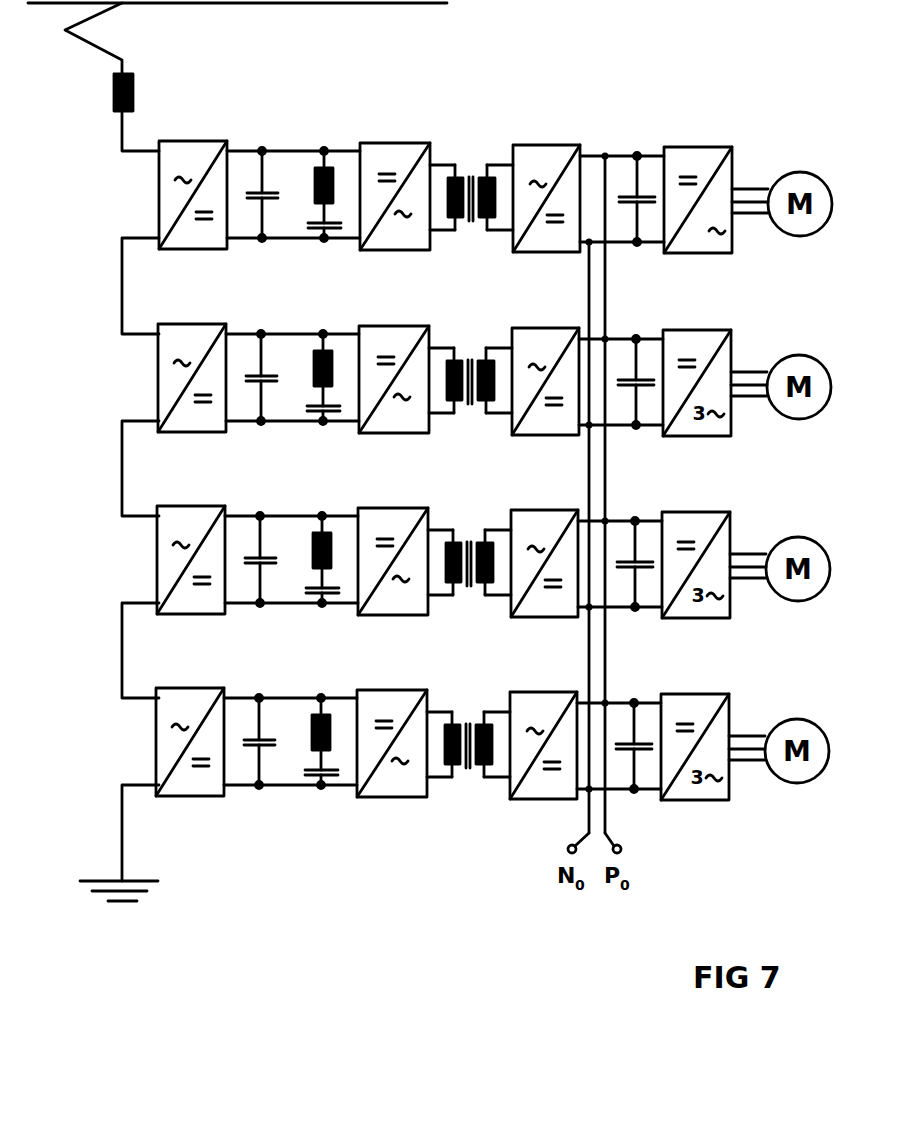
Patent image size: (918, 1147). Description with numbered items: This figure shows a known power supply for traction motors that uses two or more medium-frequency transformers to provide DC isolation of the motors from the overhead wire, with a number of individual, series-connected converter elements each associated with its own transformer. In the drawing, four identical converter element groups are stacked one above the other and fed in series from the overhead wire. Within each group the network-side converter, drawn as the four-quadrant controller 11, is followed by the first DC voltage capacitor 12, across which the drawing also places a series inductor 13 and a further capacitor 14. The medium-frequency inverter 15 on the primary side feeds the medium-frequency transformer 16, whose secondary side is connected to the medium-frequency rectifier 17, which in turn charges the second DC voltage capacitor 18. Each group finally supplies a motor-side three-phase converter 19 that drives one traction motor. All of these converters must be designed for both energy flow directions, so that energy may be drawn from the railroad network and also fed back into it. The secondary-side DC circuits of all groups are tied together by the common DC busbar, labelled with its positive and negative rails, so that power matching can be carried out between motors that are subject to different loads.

The rectifier (AC/DC converter) 11 is at (182, 140).
The DC link capacitor 12 is at (270, 190).
The inductor 13 is at (330, 172).
The capacitor 14 is at (340, 222).
The DC/AC inverter 15 is at (400, 143).
The transformer 16 is at (472, 190).
The AC/DC rectifier 17 is at (545, 145).
The DC link capacitor 18 is at (645, 197).
The three-phase inverter 19 is at (715, 147).